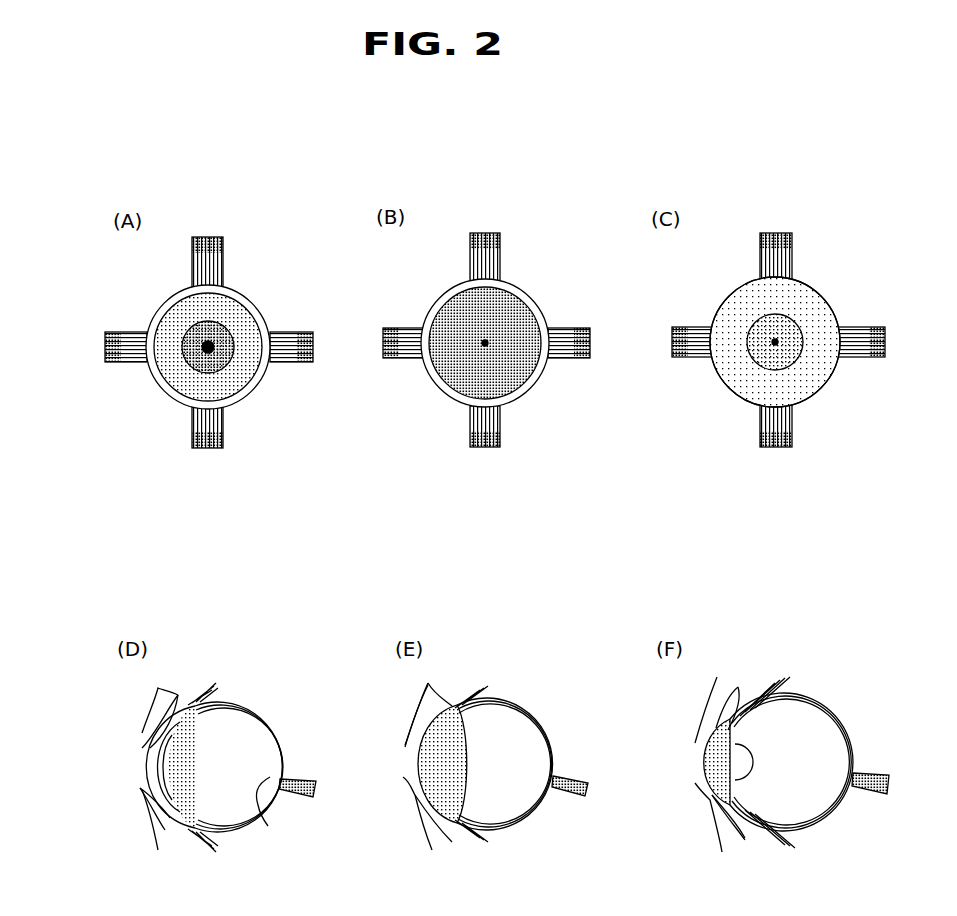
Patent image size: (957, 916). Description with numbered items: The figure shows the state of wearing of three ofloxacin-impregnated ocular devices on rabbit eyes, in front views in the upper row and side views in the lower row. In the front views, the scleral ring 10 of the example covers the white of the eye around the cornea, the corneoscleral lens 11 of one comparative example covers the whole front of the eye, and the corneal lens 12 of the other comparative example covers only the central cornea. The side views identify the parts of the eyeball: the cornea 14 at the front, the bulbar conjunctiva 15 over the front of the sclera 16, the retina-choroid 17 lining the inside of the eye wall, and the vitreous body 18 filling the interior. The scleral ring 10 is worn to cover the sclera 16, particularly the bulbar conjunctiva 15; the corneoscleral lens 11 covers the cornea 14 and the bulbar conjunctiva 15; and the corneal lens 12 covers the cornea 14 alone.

The scleral ring 10 is at (255, 506).
The corneoscleral lens 11 is at (507, 487).
The corneal lens 12 is at (780, 500).
The cornea 14 is at (109, 813).
The bulbar conjunctiva 15 is at (113, 712).
The sclera 16 is at (292, 803).
The retina-choroid 17 is at (283, 779).
The vitreous body 18 is at (253, 727).